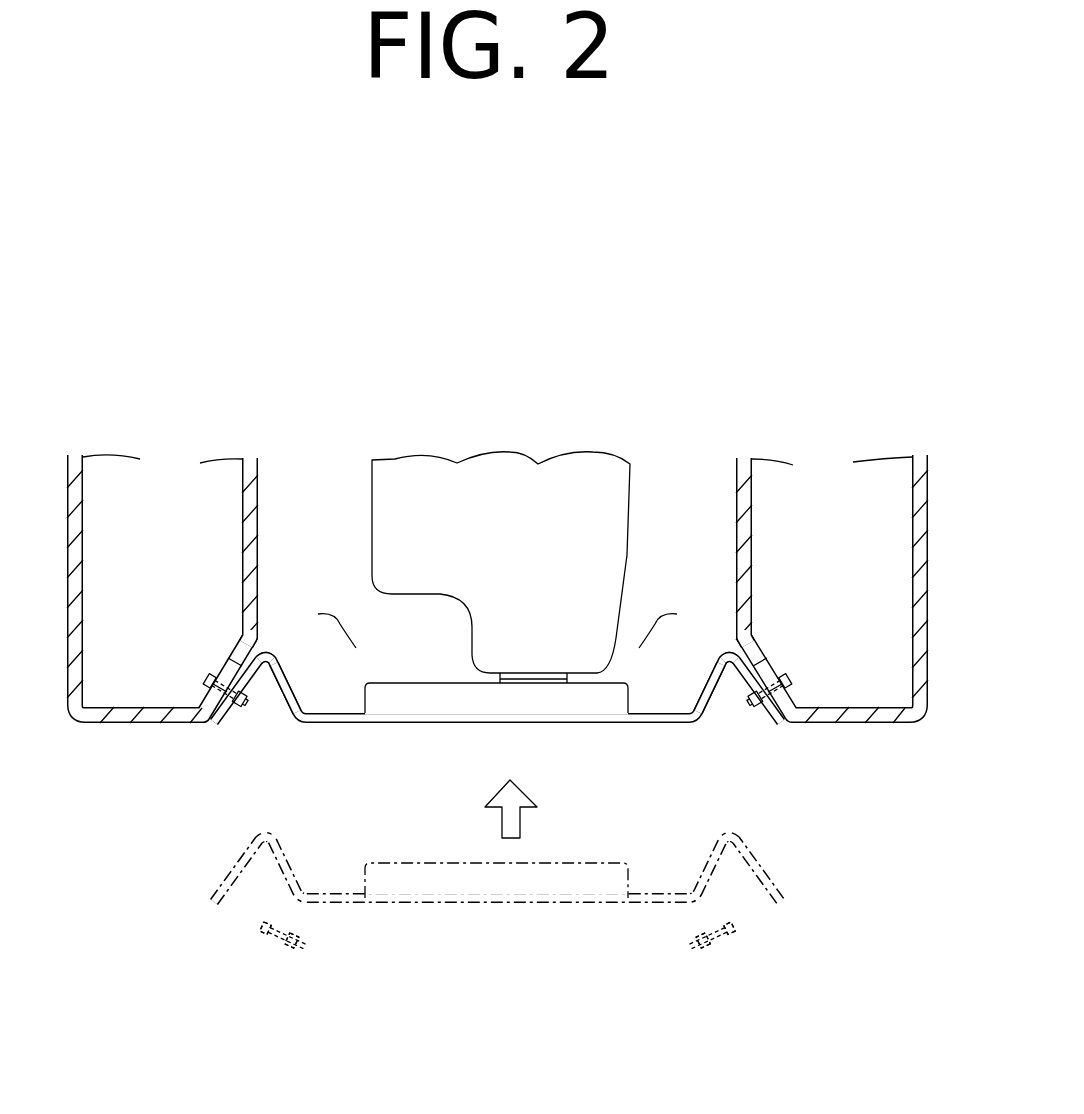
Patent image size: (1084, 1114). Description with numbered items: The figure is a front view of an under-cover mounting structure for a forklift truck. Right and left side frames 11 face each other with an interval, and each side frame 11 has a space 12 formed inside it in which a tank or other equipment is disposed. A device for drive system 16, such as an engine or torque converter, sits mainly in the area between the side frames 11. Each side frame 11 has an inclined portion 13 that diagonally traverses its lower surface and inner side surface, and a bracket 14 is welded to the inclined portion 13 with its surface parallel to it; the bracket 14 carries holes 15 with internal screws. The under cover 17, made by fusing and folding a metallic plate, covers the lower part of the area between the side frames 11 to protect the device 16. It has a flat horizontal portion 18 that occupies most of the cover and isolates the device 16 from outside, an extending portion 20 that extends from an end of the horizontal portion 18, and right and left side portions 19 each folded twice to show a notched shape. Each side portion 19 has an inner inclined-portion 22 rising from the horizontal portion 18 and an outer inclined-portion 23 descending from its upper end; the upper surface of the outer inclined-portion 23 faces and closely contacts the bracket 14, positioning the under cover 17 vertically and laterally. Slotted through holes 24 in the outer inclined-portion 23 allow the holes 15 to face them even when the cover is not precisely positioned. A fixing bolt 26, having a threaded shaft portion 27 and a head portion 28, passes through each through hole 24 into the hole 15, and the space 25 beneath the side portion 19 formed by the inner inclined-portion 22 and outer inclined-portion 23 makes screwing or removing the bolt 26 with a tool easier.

The side frame 11 is at (115, 722).
The space 12 is at (220, 503).
The inclined portion 13 is at (257, 647).
The bracket 14 is at (220, 708).
The hole 15 is at (223, 663).
The device for drive system 16 is at (370, 488).
The under cover 17 is at (640, 906).
The horizontal portion 18 is at (354, 706).
The side portion 19 is at (497, 623).
The extending portion 20 is at (473, 710).
The inner inclined-portion 22 is at (300, 690).
The outer inclined-portion 23 is at (258, 653).
The through hole 24 is at (233, 724).
The space 25 is at (288, 713).
The fixing bolt 26 is at (265, 720).
The shaft portion 27 is at (264, 940).
The head portion 28 is at (300, 947).